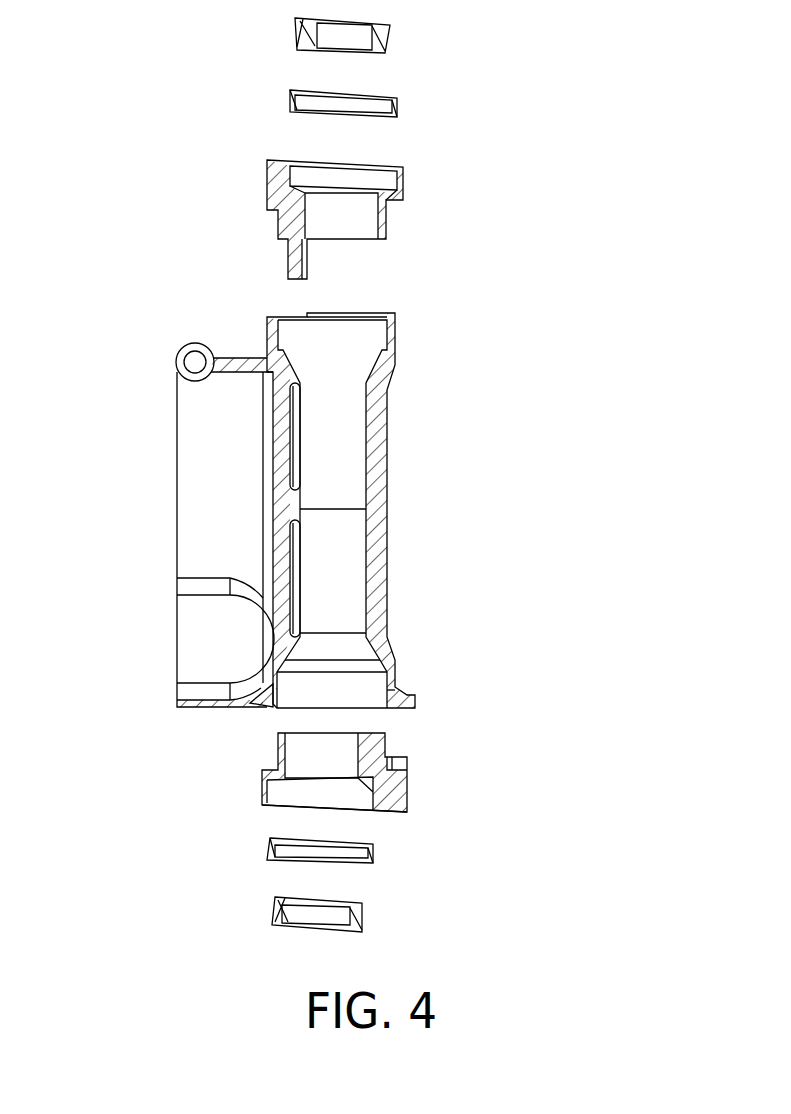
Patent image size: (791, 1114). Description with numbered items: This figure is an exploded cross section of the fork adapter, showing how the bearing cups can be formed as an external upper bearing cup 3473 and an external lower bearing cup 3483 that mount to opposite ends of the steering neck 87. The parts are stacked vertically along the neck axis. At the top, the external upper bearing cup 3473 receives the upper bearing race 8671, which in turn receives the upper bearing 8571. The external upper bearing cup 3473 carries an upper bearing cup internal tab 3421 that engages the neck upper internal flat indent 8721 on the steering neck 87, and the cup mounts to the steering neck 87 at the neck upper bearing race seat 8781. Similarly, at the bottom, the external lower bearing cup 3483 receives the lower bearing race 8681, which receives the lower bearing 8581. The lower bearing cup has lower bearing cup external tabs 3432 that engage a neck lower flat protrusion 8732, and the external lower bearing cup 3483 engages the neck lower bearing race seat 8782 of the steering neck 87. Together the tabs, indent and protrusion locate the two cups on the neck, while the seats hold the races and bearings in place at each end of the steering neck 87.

The upper bearing 8571 is at (392, 40).
The upper bearing race 8671 is at (398, 100).
The external upper bearing cup 3473 is at (292, 216).
The upper bearing cup internal tab 3421 is at (290, 266).
The neck upper bearing race seat 8781 is at (387, 333).
The steering neck 87 is at (404, 495).
The neck upper internal flat indent 8721 is at (280, 383).
The neck lower flat protrusion 8732 is at (415, 697).
The neck lower bearing race seat 8782 is at (256, 690).
The lower bearing cup external tabs 3432 is at (325, 788).
The external lower bearing cup 3483 is at (262, 790).
The lower bearing race 8681 is at (375, 860).
The lower bearing 8581 is at (365, 924).